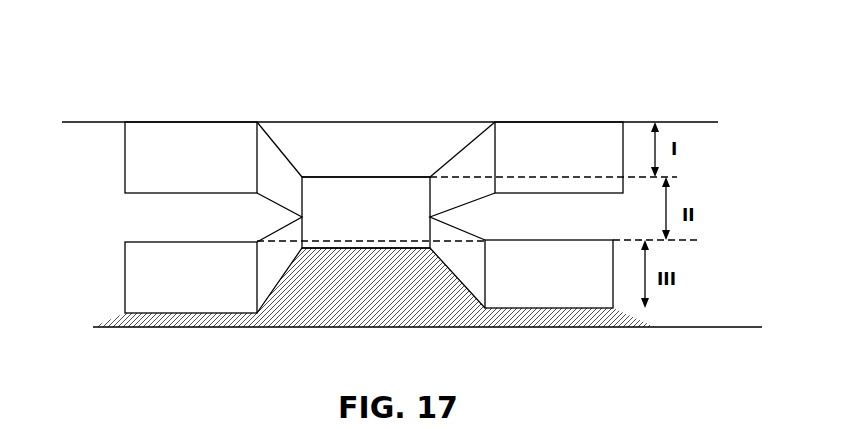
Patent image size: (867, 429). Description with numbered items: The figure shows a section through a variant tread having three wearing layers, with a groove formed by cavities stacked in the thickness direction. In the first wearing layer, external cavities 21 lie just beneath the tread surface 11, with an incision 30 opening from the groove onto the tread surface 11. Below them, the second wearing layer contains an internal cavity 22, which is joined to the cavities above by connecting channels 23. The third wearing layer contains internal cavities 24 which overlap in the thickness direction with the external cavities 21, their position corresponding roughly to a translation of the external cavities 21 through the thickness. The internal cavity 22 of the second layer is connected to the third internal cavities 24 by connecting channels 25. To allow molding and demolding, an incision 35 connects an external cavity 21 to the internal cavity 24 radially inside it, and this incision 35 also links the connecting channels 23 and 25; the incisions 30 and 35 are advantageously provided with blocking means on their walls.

The tread surface 11 is at (192, 118).
The external cavities 21 is at (180, 140).
The internal cavities 22 is at (343, 207).
The connecting channels 23 is at (263, 163).
The internal cavities 24 is at (193, 290).
The connecting channels 25 is at (463, 263).
The incision 30 is at (392, 158).
The incision 35 is at (185, 217).